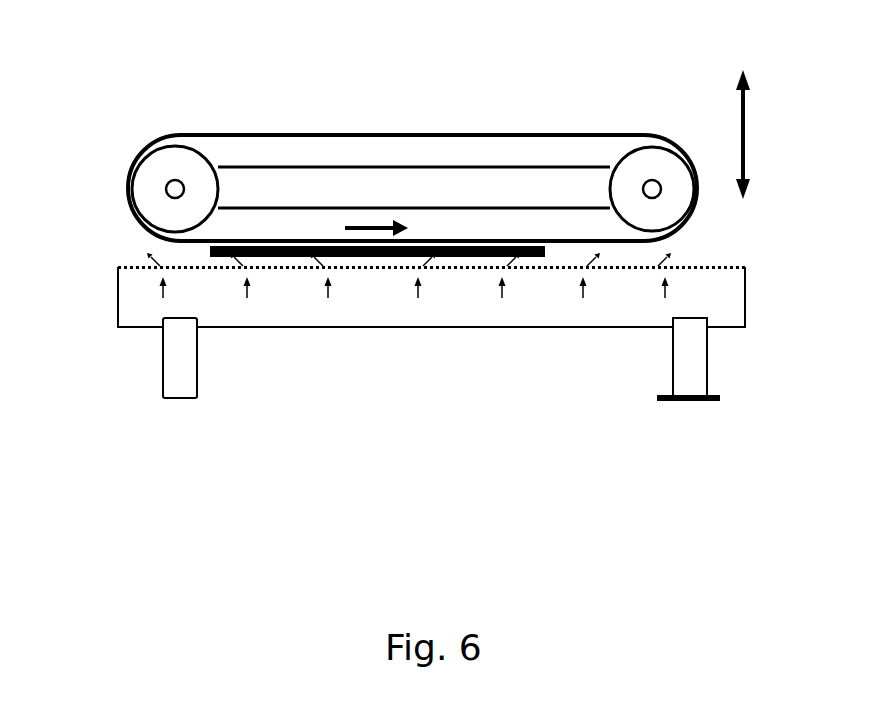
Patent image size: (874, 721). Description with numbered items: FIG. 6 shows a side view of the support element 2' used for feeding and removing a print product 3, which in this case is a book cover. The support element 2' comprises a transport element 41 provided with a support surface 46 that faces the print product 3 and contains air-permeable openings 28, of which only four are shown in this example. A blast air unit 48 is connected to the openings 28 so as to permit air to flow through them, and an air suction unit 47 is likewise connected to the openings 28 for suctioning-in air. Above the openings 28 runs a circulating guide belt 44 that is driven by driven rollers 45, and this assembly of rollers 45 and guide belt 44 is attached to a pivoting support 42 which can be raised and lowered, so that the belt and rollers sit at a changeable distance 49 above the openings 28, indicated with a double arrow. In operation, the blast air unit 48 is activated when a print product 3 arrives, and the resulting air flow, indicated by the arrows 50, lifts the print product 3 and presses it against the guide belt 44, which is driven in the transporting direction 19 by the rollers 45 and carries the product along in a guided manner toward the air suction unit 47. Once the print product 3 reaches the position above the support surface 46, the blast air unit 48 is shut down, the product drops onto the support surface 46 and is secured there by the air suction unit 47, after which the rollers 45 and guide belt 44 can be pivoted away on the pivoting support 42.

The support element 2' is at (74, 312).
The print product 3 is at (267, 253).
The transporting direction 19 is at (395, 222).
The air-permeable openings 28 is at (700, 263).
The transport element 41 is at (555, 313).
The pivoting support 42 is at (525, 182).
The guide belt 44 is at (303, 135).
The driven rollers 45 is at (160, 172).
The support surface 46 is at (138, 267).
The air suction unit 47 is at (698, 380).
The blast air unit 48 is at (183, 350).
The changeable distance 49 is at (745, 148).
The arrows 50 is at (419, 283).